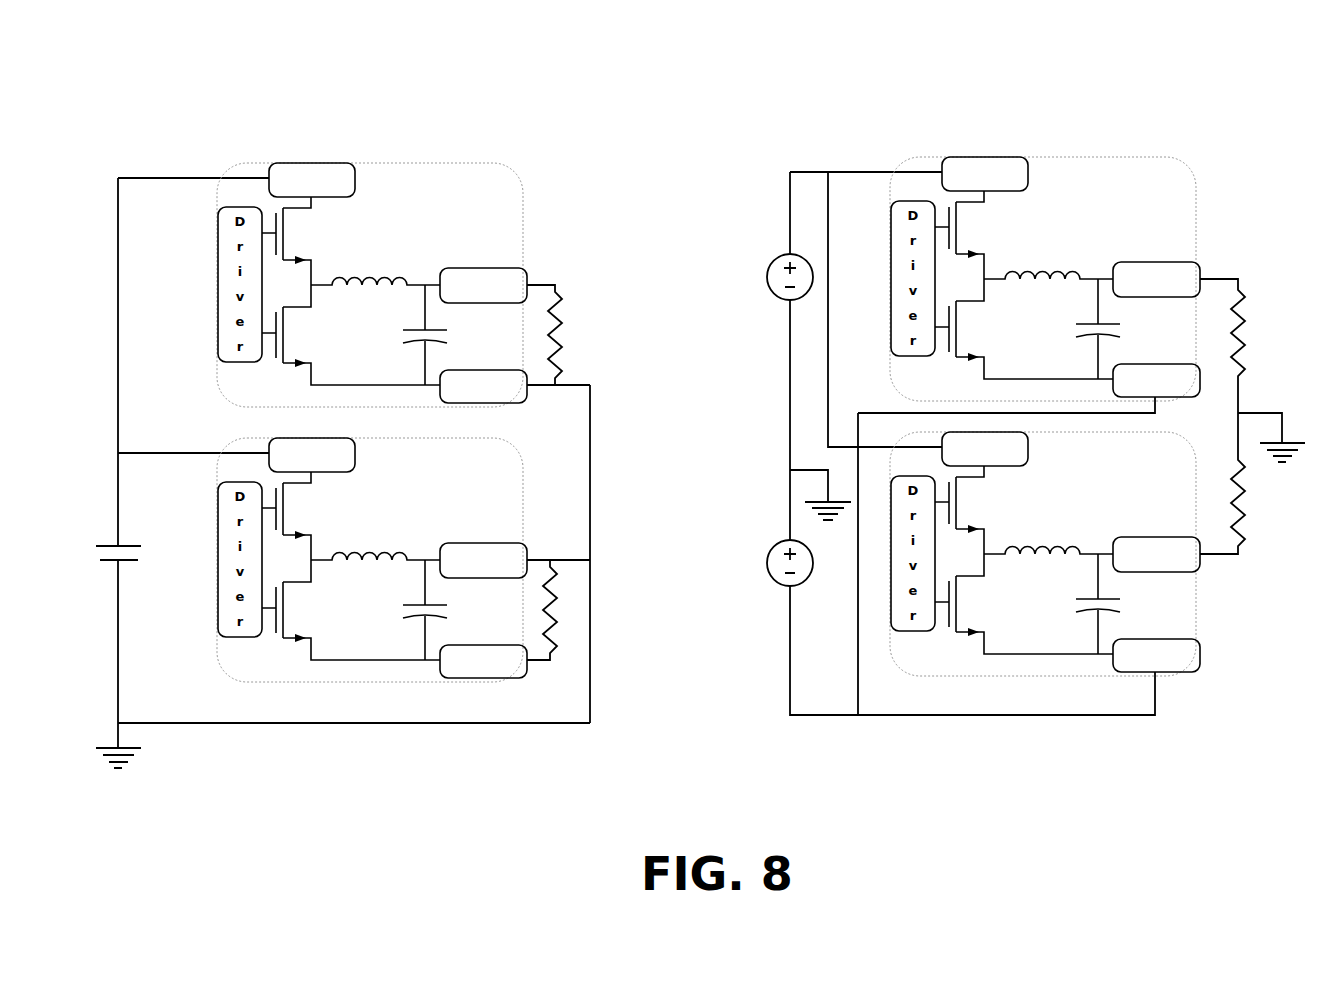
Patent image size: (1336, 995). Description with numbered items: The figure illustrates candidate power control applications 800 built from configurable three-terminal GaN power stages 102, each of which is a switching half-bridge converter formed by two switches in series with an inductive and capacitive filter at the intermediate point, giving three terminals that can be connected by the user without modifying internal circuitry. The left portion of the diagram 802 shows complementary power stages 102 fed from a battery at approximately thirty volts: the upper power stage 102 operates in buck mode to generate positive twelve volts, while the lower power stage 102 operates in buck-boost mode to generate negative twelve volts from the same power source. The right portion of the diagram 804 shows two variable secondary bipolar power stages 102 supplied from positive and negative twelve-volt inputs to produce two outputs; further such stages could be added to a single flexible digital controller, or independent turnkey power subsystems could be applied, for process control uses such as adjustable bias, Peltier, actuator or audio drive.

The power control applications 800 is at (478, 60).
The left portion of the diagram 802 is at (222, 90).
The right portion of the diagram 804 is at (955, 98).
The configurable three-terminal GaN power stage 102 is at (215, 155).